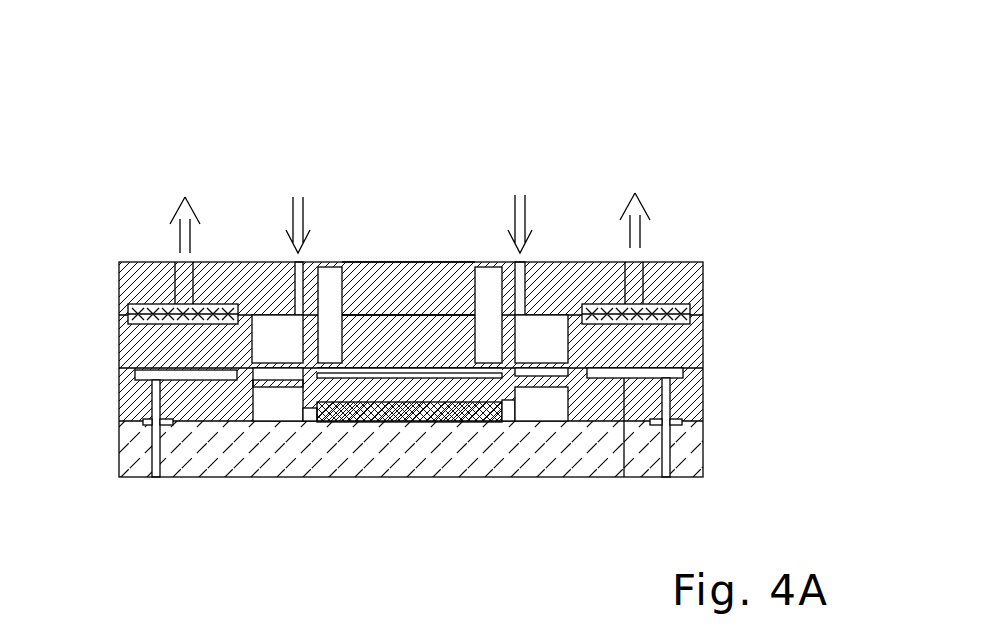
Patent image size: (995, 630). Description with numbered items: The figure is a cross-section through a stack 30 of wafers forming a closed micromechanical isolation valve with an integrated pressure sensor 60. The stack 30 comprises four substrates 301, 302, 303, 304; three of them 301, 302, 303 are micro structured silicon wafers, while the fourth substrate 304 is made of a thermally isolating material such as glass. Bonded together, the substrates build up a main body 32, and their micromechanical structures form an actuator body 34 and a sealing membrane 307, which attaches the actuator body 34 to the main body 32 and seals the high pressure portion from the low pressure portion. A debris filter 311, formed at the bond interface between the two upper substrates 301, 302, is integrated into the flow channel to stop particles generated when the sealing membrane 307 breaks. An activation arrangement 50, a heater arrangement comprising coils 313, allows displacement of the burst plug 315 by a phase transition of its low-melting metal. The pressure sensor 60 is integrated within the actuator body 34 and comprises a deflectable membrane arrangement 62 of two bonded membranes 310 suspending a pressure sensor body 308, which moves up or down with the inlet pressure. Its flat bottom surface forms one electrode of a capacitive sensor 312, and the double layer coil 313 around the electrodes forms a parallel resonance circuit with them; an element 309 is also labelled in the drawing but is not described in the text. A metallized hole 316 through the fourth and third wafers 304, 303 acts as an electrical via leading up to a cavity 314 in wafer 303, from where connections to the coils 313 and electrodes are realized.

The stack of wafers 30 is at (118, 352).
The main body 32 is at (680, 258).
The actuator body 34 is at (380, 262).
The activation arrangement 50 is at (293, 387).
The pressure sensor 60 is at (385, 165).
The deflectable membrane arrangement 62 is at (328, 245).
The first substrate 301 is at (703, 280).
The second substrate 302 is at (703, 330).
The third substrate 303 is at (703, 392).
The fourth substrate 304 is at (700, 455).
The sealing membrane 307 is at (294, 260).
The pressure sensor body 308 is at (380, 262).
The vibration plate 309 is at (543, 387).
The membranes 310 is at (487, 360).
The debris filter 311 is at (577, 260).
The capacitive sensor 312 is at (378, 377).
The coils 313 is at (330, 383).
The cavity 314 is at (624, 473).
The burst plug 315 is at (407, 412).
The hole 316 is at (660, 477).